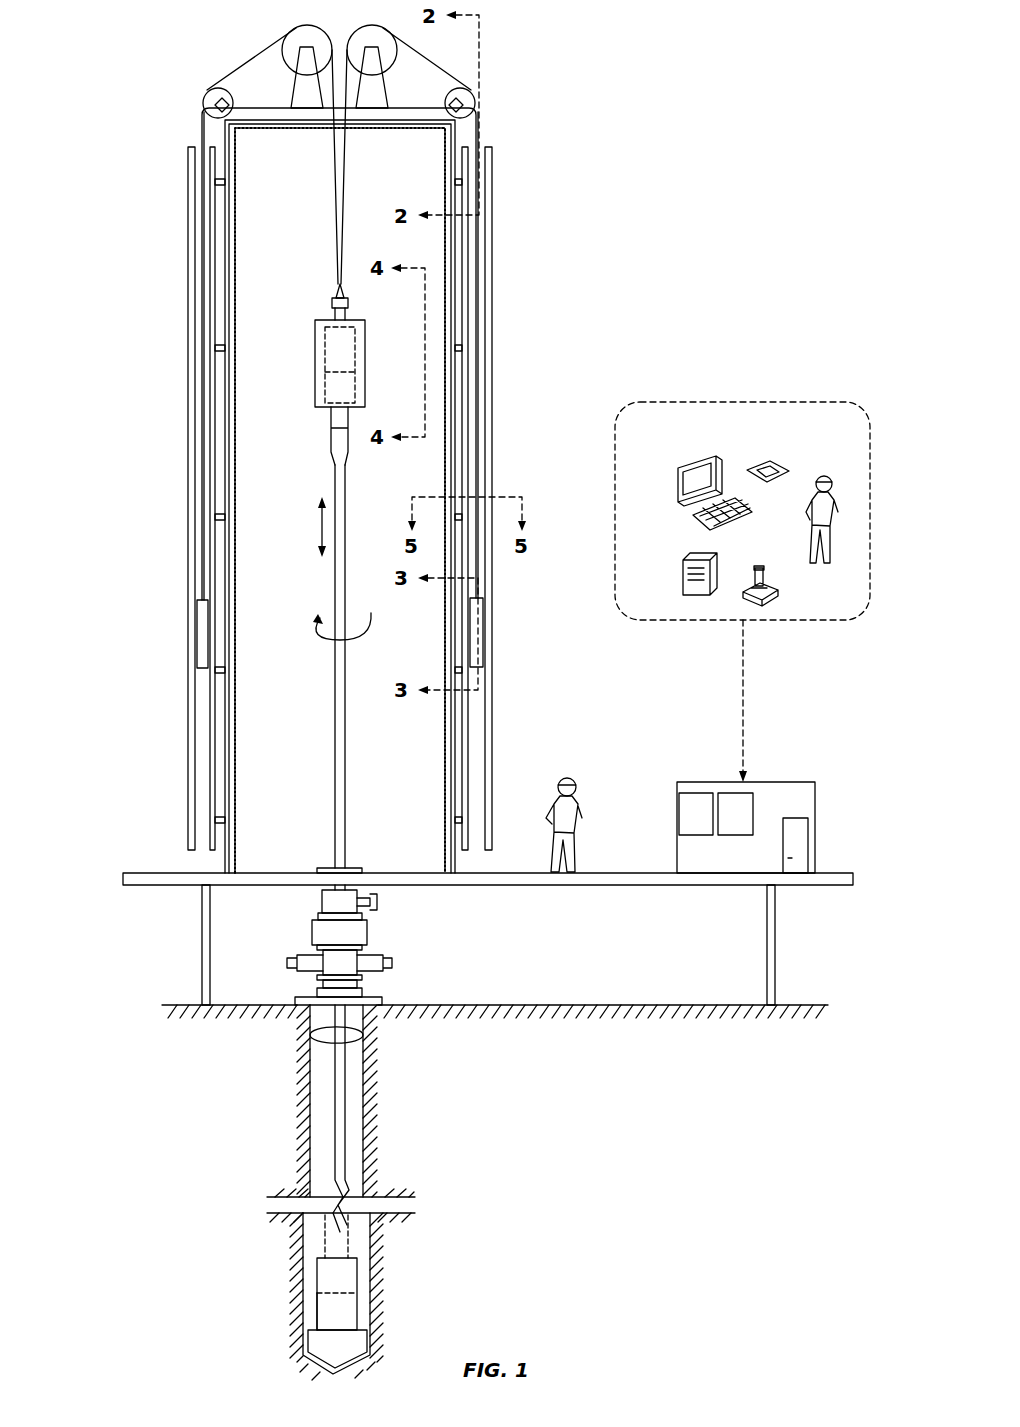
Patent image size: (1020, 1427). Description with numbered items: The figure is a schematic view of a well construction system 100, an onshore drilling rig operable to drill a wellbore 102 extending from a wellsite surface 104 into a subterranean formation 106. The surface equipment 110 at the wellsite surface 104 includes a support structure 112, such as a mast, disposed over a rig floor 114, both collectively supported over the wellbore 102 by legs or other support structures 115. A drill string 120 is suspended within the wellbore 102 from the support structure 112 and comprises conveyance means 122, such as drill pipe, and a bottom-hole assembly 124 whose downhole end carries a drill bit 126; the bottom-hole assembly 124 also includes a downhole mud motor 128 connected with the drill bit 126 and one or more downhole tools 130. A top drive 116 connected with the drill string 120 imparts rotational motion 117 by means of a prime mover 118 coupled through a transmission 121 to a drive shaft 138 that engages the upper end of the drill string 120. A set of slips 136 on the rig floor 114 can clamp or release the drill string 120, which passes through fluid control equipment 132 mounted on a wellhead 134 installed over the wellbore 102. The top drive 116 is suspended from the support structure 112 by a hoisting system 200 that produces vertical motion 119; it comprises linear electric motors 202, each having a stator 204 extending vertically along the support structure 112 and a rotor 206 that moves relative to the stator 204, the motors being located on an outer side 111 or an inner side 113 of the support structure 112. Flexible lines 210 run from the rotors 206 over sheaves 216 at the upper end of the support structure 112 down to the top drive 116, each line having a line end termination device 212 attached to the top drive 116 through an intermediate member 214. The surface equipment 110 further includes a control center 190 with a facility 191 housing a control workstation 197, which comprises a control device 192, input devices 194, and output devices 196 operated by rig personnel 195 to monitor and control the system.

The well construction system 100 is at (122, 37).
The wellbore 102 is at (308, 1125).
The wellsite surface 104 is at (488, 1003).
The subterranean formation 106 is at (420, 1338).
The surface equipment 110 is at (660, 239).
The outer side 111 is at (338, 465).
The support structure 112 is at (236, 240).
The inner side 113 is at (338, 465).
The rig floor 114 is at (396, 860).
The support structures 115 is at (210, 946).
The top drive 116 is at (315, 366).
The rotational motion 117 is at (316, 618).
The prime mover 118 is at (357, 338).
The vertical motion 119 is at (320, 528).
The drill string 120 is at (335, 723).
The transmission 121 is at (357, 393).
The conveyance means 122 is at (334, 797).
The bottom-hole assembly 124 is at (358, 1266).
The drill bit 126 is at (318, 1345).
The downhole mud motor 128 is at (328, 1307).
The downhole tools 130 is at (328, 1280).
The fluid control equipment 132 is at (368, 930).
The wellhead 134 is at (362, 991).
The slips 136 is at (326, 868).
The drive shaft 138 is at (331, 420).
The control center 190 is at (695, 778).
The facility 191 is at (796, 782).
The control device 192 is at (683, 572).
The input devices 194 is at (773, 461).
The rig personnel 195 is at (828, 476).
The output devices 196 is at (678, 480).
The control workstation 197 is at (736, 446).
The hoisting system 200 is at (186, 130).
The linear electric motors 202 is at (186, 188).
The stator 204 is at (210, 247).
The rotor 206 is at (197, 624).
The flexible lines 210 is at (248, 68).
The line end termination device 212 is at (334, 294).
The intermediate member 214 is at (331, 303).
The sheaves 216 is at (296, 28).